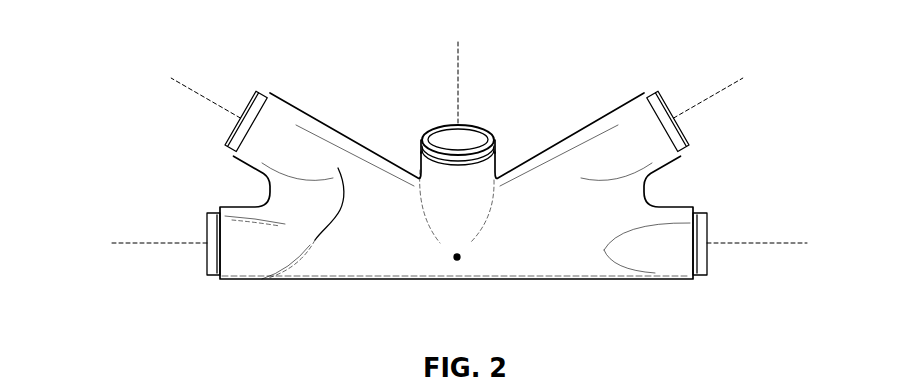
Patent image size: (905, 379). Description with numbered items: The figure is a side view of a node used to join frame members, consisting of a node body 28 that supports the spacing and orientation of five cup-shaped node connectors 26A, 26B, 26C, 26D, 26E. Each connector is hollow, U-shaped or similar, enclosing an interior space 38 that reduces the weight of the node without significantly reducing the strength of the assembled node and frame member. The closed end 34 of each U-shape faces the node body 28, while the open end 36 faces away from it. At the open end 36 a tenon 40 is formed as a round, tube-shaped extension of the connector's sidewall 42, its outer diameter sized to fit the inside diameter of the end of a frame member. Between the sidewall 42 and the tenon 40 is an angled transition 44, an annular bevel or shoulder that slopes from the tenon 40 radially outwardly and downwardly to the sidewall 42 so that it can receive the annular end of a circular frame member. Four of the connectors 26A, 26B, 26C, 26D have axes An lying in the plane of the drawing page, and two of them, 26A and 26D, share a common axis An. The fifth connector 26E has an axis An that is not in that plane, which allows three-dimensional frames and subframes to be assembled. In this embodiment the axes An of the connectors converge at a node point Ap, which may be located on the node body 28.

The node connector 26A is at (252, 263).
The node connector 26B is at (313, 118).
The node connector 26C is at (622, 107).
The node connector 26D is at (672, 270).
The fifth node connector 26E is at (432, 227).
The node body 28 is at (543, 265).
The closed end 34 is at (343, 210).
The open end 36 is at (238, 122).
The interior space 38 is at (458, 140).
The tenon 40 is at (683, 128).
The sidewall 42 is at (293, 110).
The angled transition 44 is at (228, 155).
The axis An is at (198, 95).
The node point Ap is at (458, 258).